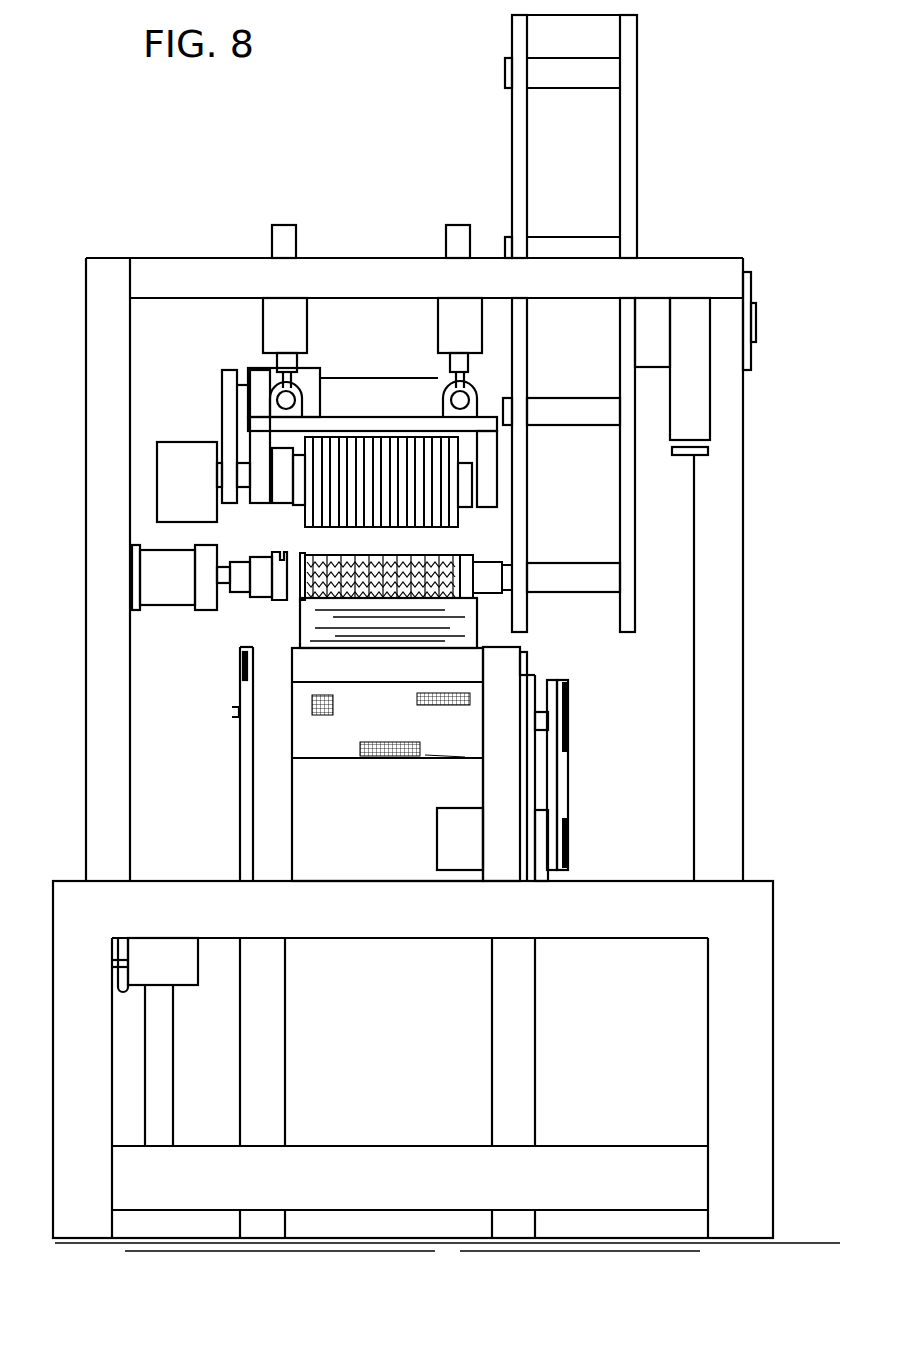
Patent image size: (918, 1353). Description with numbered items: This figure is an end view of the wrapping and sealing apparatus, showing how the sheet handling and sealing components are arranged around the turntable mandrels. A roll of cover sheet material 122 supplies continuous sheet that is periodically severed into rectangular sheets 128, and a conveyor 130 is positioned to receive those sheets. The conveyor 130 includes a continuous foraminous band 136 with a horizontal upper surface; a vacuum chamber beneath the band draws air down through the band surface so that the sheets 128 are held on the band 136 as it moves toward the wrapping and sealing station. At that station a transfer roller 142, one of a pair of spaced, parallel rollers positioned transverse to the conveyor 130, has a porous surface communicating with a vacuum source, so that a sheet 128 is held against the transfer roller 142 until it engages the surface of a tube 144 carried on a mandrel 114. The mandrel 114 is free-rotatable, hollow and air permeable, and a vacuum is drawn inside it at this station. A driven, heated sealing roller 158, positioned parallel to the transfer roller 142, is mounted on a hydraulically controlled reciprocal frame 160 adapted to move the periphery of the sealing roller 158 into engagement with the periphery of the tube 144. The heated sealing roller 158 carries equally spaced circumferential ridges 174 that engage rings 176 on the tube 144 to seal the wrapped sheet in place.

The hydraulically controlled reciprocal frame 160 is at (337, 346).
The sealing roller 158 is at (328, 465).
The circumferential ridges 174 is at (327, 493).
The tube 144 is at (307, 594).
The mandrel 114 is at (488, 590).
The rings 176 is at (300, 607).
The transfer roller 142 is at (323, 628).
The roll of cover sheet material 122 is at (302, 712).
The rectangular sheets 128 is at (398, 648).
The continuous foraminous band 136 is at (360, 648).
The conveyor 130 is at (448, 667).